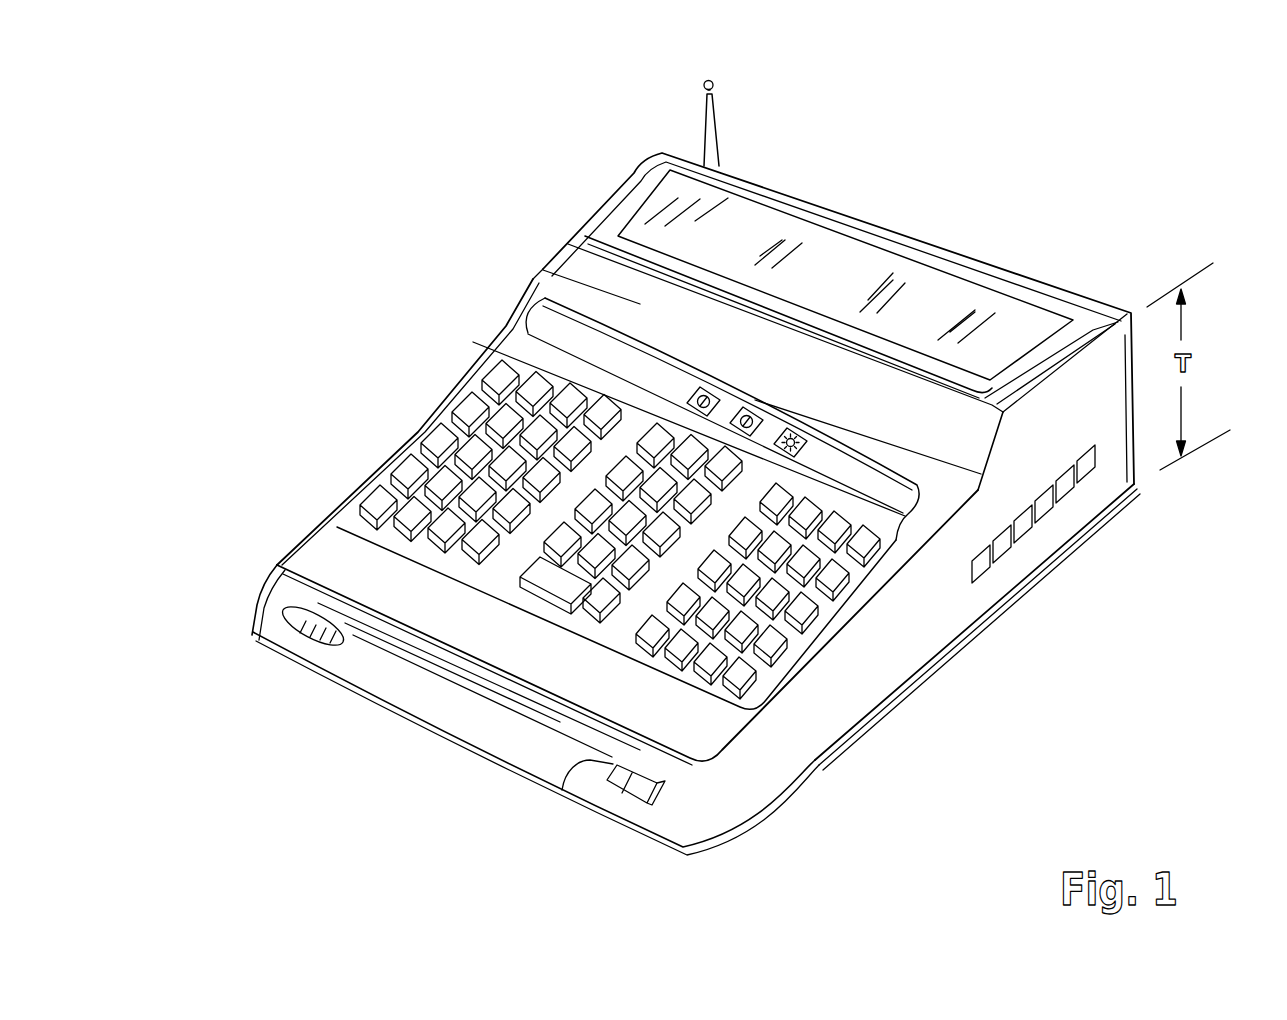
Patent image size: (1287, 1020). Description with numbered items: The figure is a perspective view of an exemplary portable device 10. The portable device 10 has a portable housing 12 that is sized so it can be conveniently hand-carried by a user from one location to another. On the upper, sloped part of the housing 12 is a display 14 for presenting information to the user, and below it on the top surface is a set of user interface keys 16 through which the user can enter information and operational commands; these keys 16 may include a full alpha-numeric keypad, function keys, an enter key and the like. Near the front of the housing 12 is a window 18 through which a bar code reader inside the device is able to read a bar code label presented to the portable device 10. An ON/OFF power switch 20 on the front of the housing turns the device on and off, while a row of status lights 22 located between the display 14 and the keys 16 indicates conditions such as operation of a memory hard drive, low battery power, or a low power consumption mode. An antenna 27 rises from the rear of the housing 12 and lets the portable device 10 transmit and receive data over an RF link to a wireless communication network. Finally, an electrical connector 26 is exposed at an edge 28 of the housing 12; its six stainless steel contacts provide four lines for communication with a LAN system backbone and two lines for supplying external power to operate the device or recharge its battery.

The portable device 10 is at (385, 240).
The portable housing 12 is at (293, 551).
The display 14 is at (937, 284).
The user interface keys 16 is at (772, 676).
The window 18 is at (347, 648).
The ON/OFF power switch 20 is at (617, 768).
The status lights 22 is at (710, 387).
The electrical connector 26 is at (990, 594).
The antenna 27 is at (698, 127).
The edge 28 is at (897, 653).